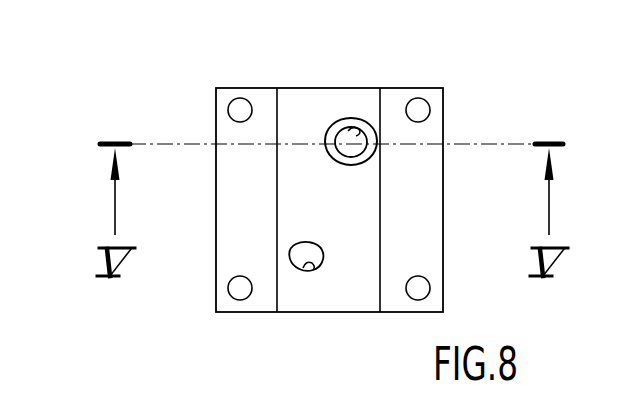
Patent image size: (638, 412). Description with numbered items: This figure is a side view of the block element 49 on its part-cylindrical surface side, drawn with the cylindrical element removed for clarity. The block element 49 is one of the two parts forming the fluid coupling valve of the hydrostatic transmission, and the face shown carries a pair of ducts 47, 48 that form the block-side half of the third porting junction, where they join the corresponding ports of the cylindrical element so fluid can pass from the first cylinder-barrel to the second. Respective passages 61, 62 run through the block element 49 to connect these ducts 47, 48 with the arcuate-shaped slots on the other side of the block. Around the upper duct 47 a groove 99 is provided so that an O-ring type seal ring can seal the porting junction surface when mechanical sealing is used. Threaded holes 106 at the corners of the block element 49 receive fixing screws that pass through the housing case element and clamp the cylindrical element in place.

The duct 47 is at (349, 132).
The duct 48 is at (316, 270).
The block element 49 is at (443, 262).
The passage 61 is at (343, 133).
The passage 62 is at (307, 252).
The groove 99 is at (371, 158).
The threaded hole 106 is at (234, 104).